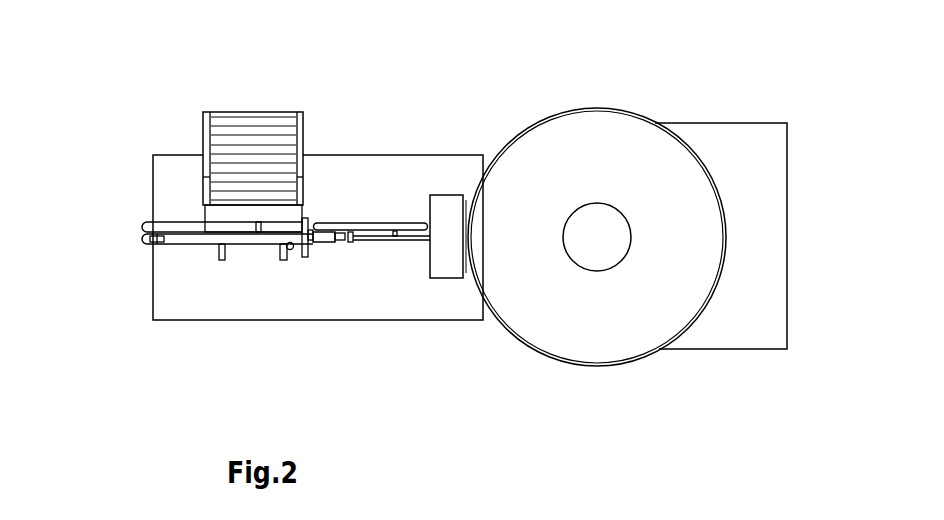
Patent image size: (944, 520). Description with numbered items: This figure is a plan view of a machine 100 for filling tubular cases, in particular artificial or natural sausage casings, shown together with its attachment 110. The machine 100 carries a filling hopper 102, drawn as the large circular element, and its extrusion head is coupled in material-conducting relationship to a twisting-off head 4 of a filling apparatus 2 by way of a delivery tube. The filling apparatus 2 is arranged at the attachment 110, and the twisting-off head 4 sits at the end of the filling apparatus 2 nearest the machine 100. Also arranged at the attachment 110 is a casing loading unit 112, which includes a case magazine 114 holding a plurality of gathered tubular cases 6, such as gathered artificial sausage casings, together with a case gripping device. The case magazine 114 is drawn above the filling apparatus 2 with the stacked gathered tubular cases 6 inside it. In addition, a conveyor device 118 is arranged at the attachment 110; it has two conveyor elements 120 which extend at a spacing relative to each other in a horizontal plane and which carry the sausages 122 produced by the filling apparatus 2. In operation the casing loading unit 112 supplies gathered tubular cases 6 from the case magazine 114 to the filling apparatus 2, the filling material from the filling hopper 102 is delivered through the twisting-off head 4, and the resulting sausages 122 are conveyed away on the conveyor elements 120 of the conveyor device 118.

The filling apparatus 2 is at (395, 285).
The twisting-off head 4 is at (447, 212).
The gathered tubular cases 6 is at (260, 143).
The machine 100 is at (682, 88).
The filling hopper 102 is at (597, 110).
The attachment 110 is at (363, 116).
The casing loading unit 112 is at (298, 272).
The case magazine 114 is at (235, 117).
The conveyor device 118 is at (194, 275).
The conveyor elements 120 is at (163, 228).
The sausages 122 is at (155, 240).